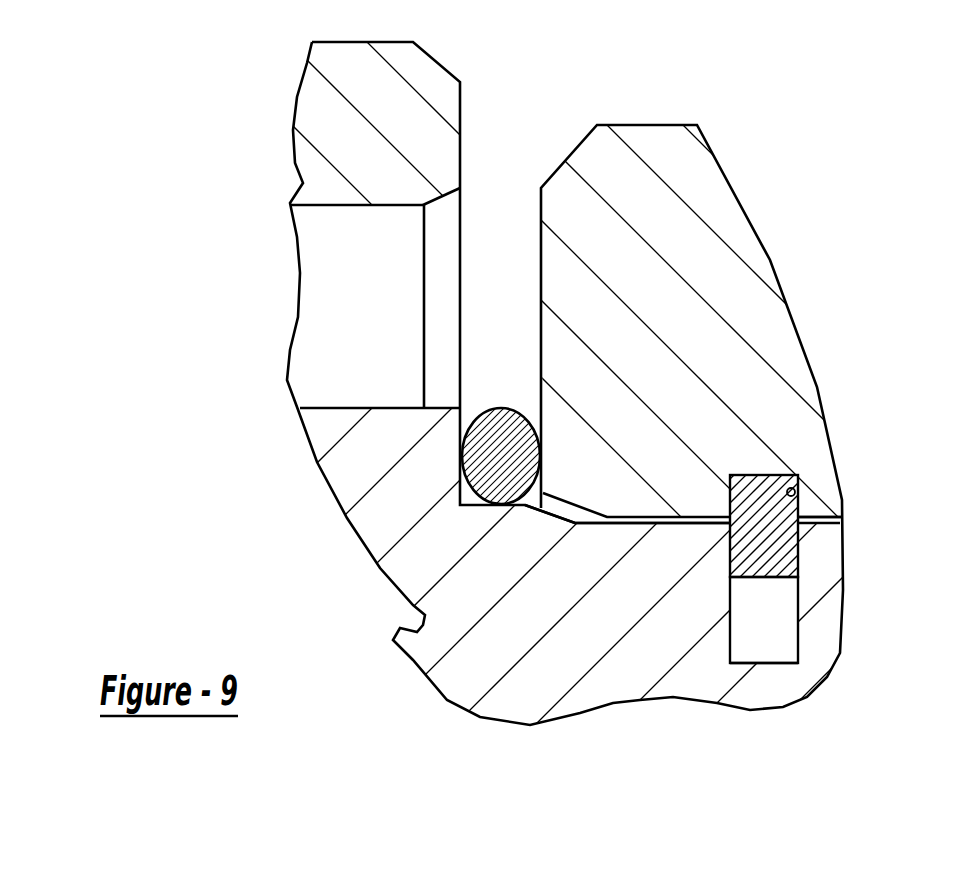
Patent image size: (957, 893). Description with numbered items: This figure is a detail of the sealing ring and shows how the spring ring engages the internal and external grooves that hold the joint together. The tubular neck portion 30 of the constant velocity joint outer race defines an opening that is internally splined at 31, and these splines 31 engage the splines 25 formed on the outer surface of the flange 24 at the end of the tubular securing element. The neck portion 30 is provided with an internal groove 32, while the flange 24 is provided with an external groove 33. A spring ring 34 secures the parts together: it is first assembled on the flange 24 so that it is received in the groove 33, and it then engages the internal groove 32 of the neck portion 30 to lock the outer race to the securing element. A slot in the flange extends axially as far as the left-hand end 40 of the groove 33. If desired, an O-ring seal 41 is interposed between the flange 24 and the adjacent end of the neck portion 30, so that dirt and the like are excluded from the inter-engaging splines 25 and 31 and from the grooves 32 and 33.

The flange 24 is at (523, 607).
The splined outer surface 25 is at (582, 520).
The tubular neck portion 30 is at (660, 147).
The internal splines 31 is at (706, 508).
The internal groove 32 is at (796, 496).
The external groove 33 is at (777, 634).
The spring ring 34 is at (777, 547).
The left-hand end of the groove 40 is at (733, 637).
The O-ring seal 41 is at (507, 405).